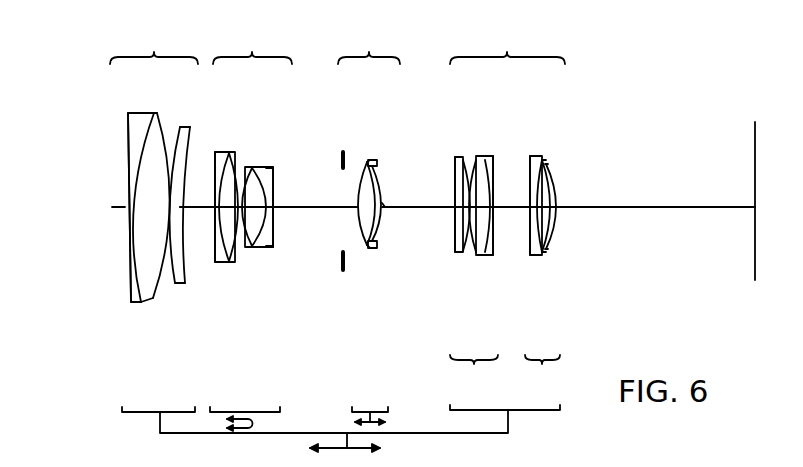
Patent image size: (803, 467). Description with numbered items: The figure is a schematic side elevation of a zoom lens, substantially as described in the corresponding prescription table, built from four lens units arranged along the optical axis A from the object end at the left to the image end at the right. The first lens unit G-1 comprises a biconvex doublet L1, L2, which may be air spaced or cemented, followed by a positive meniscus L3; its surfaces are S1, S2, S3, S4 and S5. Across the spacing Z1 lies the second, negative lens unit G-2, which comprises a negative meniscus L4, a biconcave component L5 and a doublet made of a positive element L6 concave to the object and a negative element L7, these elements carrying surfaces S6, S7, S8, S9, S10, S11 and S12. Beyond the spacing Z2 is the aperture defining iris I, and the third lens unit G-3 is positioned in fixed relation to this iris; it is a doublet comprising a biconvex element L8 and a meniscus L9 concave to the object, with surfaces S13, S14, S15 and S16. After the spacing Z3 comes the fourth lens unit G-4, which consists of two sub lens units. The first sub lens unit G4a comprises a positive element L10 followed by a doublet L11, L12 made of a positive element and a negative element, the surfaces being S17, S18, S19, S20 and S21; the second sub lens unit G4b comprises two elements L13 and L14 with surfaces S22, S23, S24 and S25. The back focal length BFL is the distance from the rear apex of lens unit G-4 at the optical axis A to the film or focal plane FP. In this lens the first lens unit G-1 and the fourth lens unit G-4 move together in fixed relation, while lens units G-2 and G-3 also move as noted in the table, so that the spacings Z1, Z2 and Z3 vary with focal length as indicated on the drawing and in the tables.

The biconvex doublet element L1 is at (128, 122).
The doublet element L2 is at (157, 132).
The positive meniscus L3 is at (181, 138).
The negative meniscus L4 is at (225, 148).
The biconcave component L5 is at (242, 158).
The positive element L6 is at (256, 168).
The negative element L7 is at (280, 173).
The biconvex element L8 is at (362, 160).
The meniscus L9 is at (377, 166).
The positive element L10 is at (458, 156).
The doublet element L11 is at (482, 163).
The doublet element L12 is at (533, 155).
The lens element L13 is at (548, 158).
The lens element L14 is at (548, 178).
The lens element surface S1 is at (128, 263).
The lens element surface S2 is at (150, 272).
The lens element surface S3 is at (150, 275).
The lens element surface S4 is at (168, 250).
The lens element surface S5 is at (181, 265).
The lens element surface S6 is at (214, 238).
The lens element surface S7 is at (220, 252).
The lens element surface S8 is at (240, 250).
The lens element surface S9 is at (250, 252).
The lens element surface S10 is at (262, 250).
The lens element surface S11 is at (275, 235).
The lens element surface S12 is at (276, 216).
The lens element surface S13 is at (362, 247).
The lens element surface S14 is at (372, 245).
The lens element surface S15 is at (378, 238).
The lens element surface S16 is at (385, 204).
The lens element surface S17 is at (463, 213).
The lens element surface S18 is at (462, 240).
The lens element surface S19 is at (462, 255).
The lens element surface S20 is at (488, 255).
The lens element surface S21 is at (493, 248).
The lens element surface S22 is at (527, 252).
The lens element surface S23 is at (553, 238).
The lens element surface S24 is at (556, 225).
The lens element surface S25 is at (556, 215).
The lens unit spacing Z1 is at (196, 197).
The lens unit spacing Z2 is at (313, 197).
The lens unit spacing Z3 is at (437, 197).
The iris I is at (342, 150).
The focal plane FP is at (755, 150).
The optical axis A is at (693, 207).
The back focal length BFL is at (656, 193).
The first lens unit G-1 is at (154, 44).
The second lens unit G-2 is at (252, 44).
The third lens unit G-3 is at (369, 44).
The fourth lens unit G-4 is at (507, 44).
The first sub lens unit G4a is at (474, 372).
The second sub lens unit G4b is at (546, 372).